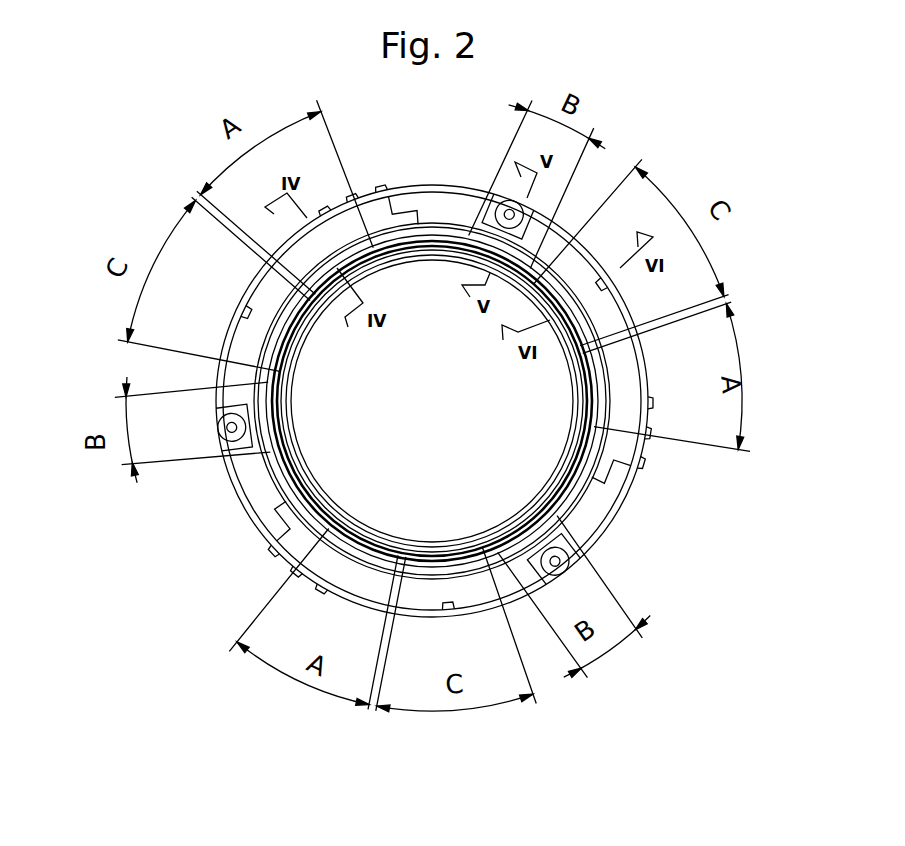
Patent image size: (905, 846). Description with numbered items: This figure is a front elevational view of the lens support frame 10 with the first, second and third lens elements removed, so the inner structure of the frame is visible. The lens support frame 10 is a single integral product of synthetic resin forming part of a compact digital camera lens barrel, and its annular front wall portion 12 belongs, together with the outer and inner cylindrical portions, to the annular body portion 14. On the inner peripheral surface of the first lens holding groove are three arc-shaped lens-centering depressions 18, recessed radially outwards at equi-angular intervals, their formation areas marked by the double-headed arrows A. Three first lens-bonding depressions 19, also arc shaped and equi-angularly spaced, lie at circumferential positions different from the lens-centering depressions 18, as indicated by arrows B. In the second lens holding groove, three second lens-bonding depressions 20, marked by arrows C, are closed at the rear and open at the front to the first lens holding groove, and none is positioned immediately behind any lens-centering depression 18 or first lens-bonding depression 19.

The lens support frame 10 is at (427, 200).
The front wall portion 12 is at (432, 401).
The annular body portion 14 is at (606, 492).
The lens-centering depressions 18 is at (372, 255).
The first lens-bonding depressions 19 is at (490, 265).
The second lens-bonding depressions 20 is at (290, 341).